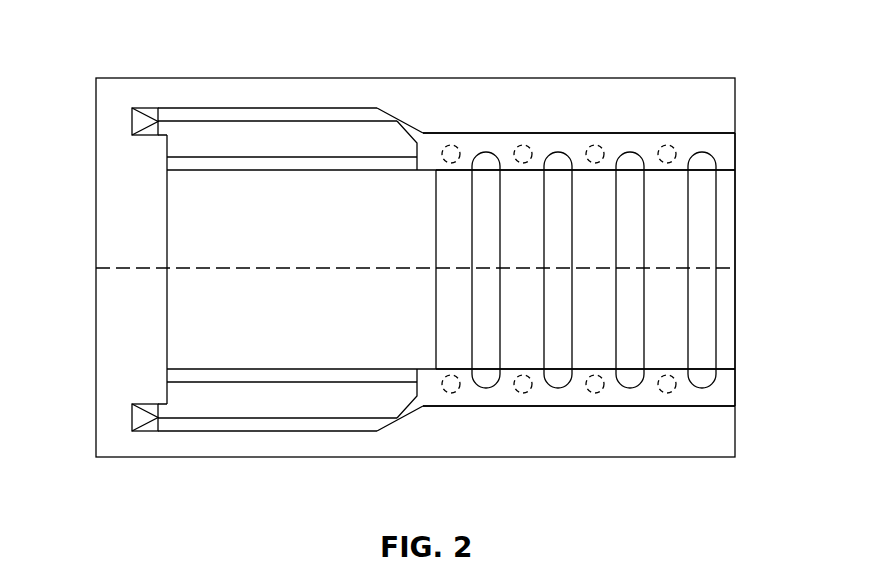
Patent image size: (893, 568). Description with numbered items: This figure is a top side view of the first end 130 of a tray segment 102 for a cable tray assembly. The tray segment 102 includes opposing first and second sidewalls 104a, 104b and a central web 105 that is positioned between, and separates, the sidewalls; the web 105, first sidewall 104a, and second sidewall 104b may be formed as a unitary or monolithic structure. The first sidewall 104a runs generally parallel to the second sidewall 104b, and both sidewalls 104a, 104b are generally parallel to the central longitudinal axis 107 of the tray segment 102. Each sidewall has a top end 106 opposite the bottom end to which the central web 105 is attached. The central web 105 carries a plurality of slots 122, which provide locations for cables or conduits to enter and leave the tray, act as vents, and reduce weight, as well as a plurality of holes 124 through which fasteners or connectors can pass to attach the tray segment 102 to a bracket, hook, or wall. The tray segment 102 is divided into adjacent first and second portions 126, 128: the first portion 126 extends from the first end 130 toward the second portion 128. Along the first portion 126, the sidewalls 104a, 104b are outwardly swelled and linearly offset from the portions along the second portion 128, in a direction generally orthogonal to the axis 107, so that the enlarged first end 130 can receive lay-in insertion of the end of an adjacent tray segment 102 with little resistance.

The tray segment 102 is at (618, 406).
The first sidewall 104a is at (488, 406).
The second sidewall 104b is at (572, 137).
The central web 105 is at (525, 210).
The top end 106 is at (733, 140).
The central longitudinal axis 107 is at (125, 268).
The slots 122 is at (632, 307).
The holes 124 is at (598, 145).
The first portion 126 is at (287, 108).
The second portion 128 is at (500, 133).
The first end 130 is at (167, 332).